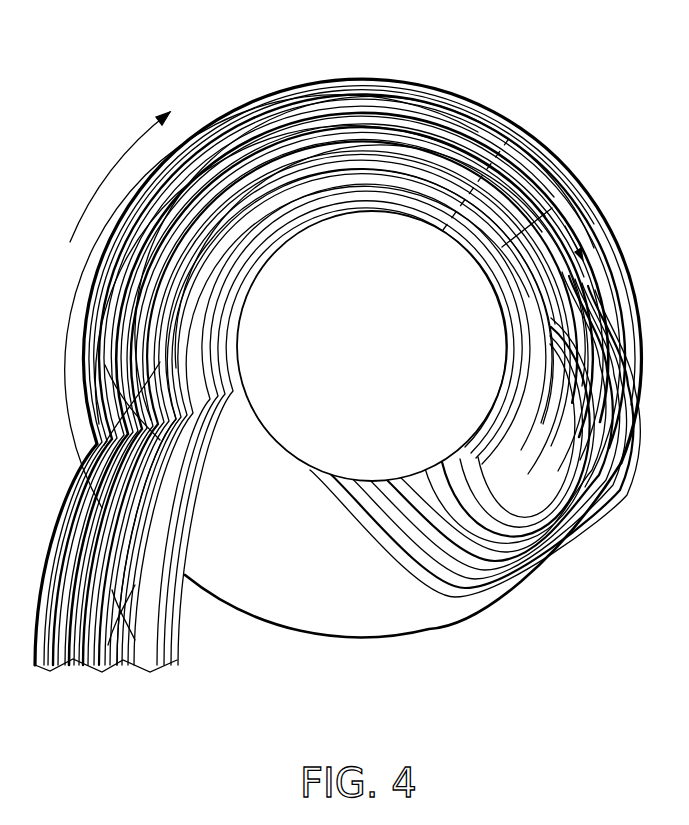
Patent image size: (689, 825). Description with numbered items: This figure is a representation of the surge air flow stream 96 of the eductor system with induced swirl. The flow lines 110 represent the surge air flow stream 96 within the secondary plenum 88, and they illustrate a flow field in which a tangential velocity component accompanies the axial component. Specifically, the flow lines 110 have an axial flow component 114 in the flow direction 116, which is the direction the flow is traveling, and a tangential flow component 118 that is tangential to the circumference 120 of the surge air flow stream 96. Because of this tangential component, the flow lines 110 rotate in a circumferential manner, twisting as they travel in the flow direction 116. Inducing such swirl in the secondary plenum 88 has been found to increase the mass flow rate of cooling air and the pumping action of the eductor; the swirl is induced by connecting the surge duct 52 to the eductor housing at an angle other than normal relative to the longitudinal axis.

The surge duct 52 is at (67, 524).
The secondary plenum 88 is at (228, 150).
The flow lines 110 is at (317, 130).
The circumference 120 is at (493, 142).
The tangential flow component 118 is at (500, 222).
The axial flow component 114 is at (563, 227).
The flow direction 116 is at (105, 180).
The surge air flow stream 96 is at (113, 309).